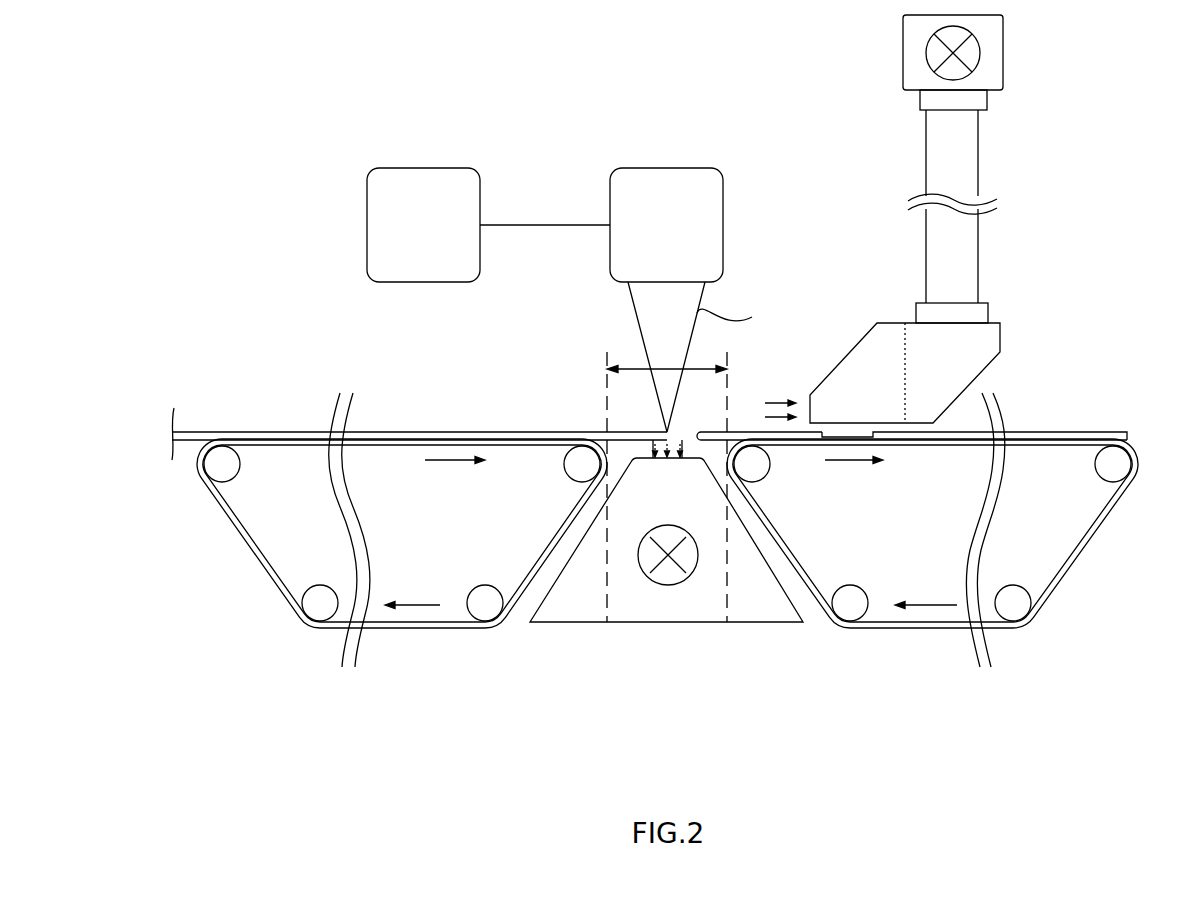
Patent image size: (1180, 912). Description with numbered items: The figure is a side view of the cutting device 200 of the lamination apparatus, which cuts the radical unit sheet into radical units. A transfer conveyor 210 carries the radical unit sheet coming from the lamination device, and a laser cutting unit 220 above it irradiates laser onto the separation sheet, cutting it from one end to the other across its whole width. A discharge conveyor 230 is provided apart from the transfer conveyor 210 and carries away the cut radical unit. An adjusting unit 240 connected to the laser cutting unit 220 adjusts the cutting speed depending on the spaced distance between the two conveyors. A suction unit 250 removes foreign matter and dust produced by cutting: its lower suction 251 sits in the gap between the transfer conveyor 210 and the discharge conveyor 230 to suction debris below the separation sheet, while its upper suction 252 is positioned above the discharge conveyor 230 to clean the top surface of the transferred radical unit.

The cutting device 200 is at (889, 292).
The transfer conveyor 210 is at (462, 633).
The laser cutting unit 220 is at (670, 168).
The discharge conveyor 230 is at (950, 627).
The adjusting unit 240 is at (425, 168).
The suction unit 250 is at (849, 355).
The lower suction 251 is at (670, 665).
The upper suction 252 is at (988, 340).